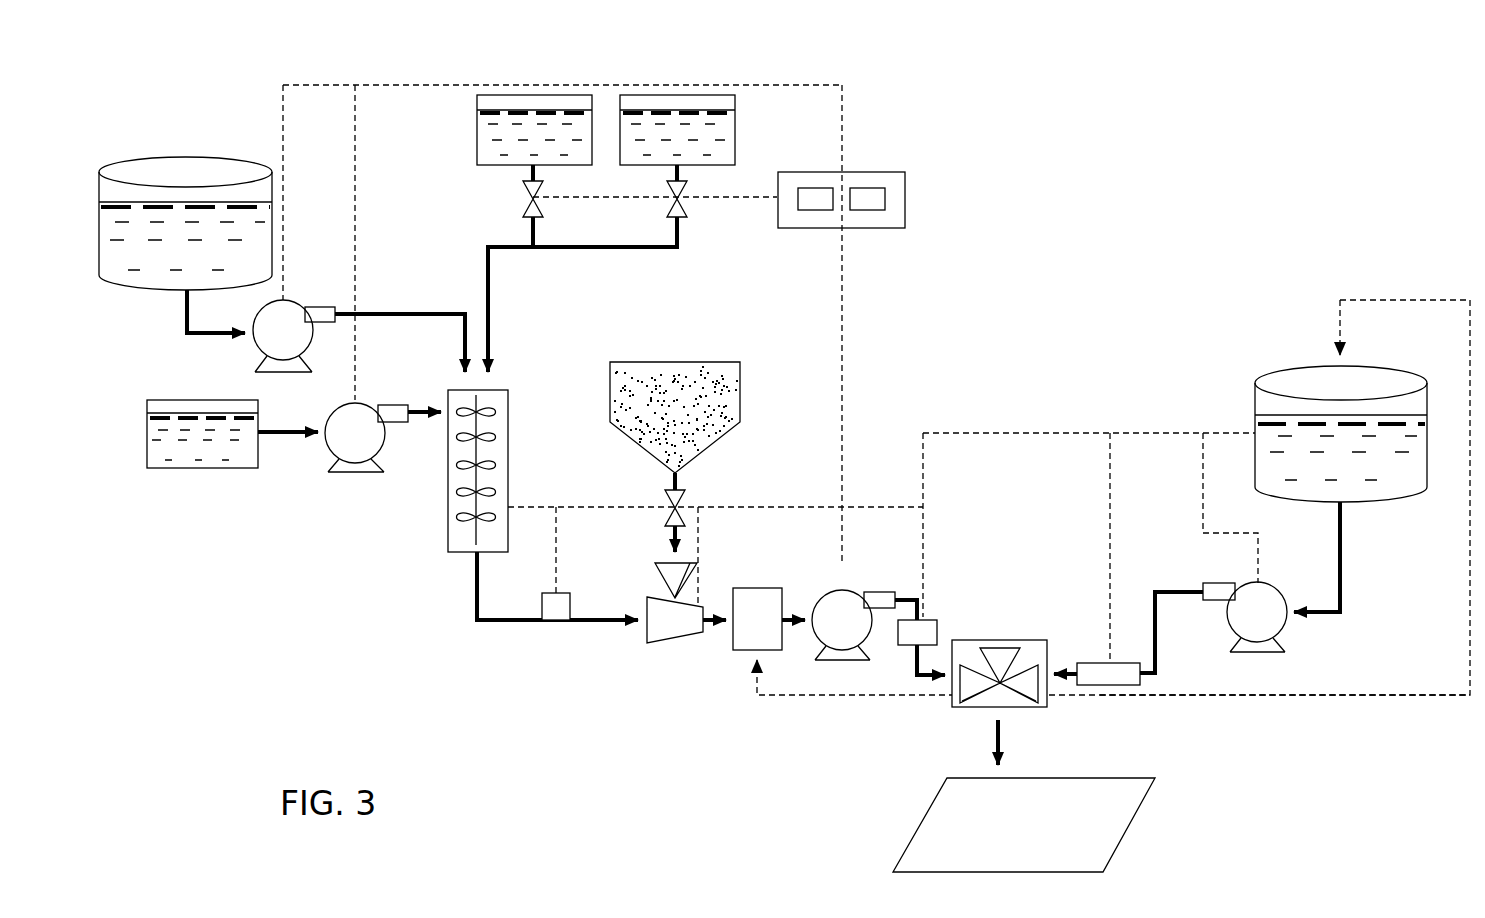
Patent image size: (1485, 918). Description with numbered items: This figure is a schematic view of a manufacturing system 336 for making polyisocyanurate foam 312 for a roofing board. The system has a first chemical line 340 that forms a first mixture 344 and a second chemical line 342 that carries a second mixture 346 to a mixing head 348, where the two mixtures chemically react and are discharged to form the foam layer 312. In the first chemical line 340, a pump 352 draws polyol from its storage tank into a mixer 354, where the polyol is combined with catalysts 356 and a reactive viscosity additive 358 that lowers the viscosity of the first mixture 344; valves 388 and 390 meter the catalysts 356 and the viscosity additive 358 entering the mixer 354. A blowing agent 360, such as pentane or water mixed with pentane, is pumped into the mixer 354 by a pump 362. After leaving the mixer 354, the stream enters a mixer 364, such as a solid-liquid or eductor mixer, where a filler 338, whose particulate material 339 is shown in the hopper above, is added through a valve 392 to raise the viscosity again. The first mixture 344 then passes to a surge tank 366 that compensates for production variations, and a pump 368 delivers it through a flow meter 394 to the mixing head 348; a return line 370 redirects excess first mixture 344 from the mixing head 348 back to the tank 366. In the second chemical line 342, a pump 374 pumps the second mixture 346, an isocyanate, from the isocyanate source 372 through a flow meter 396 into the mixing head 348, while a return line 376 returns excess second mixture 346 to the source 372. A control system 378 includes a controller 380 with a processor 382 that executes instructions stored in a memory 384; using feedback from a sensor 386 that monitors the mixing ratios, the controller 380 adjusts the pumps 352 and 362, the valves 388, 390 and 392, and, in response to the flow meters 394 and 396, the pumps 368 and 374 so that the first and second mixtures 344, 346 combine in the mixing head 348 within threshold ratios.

The polyisocyanurate foam 312 is at (1130, 823).
The manufacturing system 336 is at (1147, 155).
The filler 338 is at (742, 385).
The powder material 339 is at (690, 362).
The first chemical line 340 is at (360, 665).
The second chemical line 342 is at (1303, 748).
The first mixture 344 is at (932, 615).
The second mixture 346 is at (1152, 630).
The mixing head 348 is at (1037, 648).
The pump 352 is at (288, 305).
The mixer 354 is at (510, 463).
The catalysts 356 is at (495, 132).
The reactive viscosity additive 358 is at (735, 135).
The blowing agent 360 is at (190, 152).
The pump 362 is at (362, 410).
The mixer 364 is at (673, 644).
The tank 366 is at (755, 588).
The pump 368 is at (847, 590).
The return line 370 is at (855, 700).
The isocyanate source 372 is at (1290, 378).
The pump 374 is at (1248, 585).
The return line 376 is at (1258, 699).
The control system 378 is at (810, 130).
The controller 380 is at (875, 170).
The processor 382 is at (818, 211).
The memory 384 is at (885, 197).
The sensor 386 is at (540, 605).
The valve 388 is at (530, 197).
The valve 390 is at (683, 220).
The valve 392 is at (685, 498).
The flow meter 394 is at (907, 650).
The flow meter 396 is at (1115, 695).